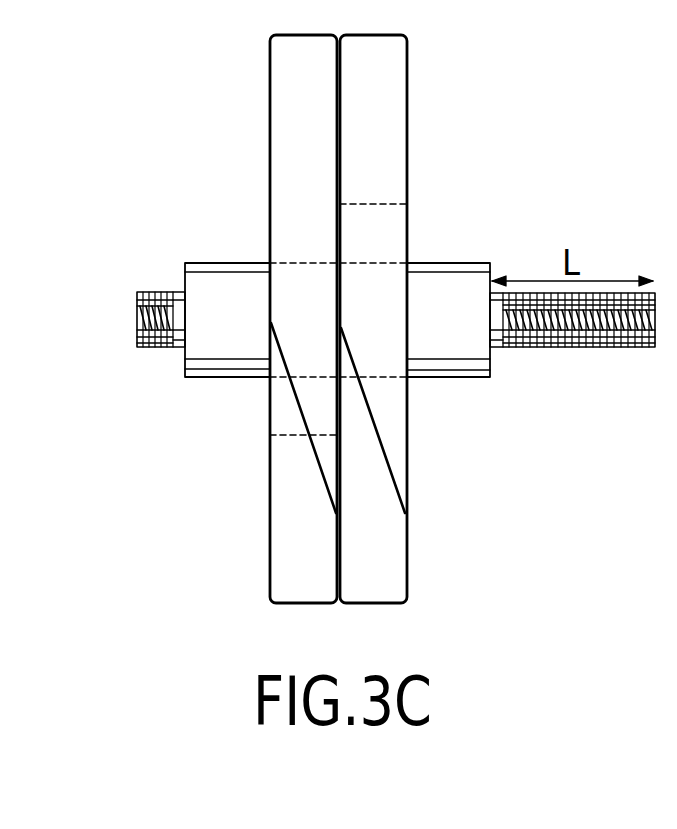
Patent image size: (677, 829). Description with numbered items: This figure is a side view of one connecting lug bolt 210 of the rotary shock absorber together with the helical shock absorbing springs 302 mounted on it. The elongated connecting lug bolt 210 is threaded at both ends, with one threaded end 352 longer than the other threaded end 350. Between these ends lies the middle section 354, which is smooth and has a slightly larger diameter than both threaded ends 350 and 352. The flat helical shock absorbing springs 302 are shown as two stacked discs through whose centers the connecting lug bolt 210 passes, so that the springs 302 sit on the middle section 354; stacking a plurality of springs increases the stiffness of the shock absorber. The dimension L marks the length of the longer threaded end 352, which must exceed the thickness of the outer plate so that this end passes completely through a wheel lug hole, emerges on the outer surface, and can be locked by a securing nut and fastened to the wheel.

The helical shock absorbing springs 302 is at (407, 572).
The connecting lug bolts 210 is at (435, 262).
The shorter threaded end 350 is at (153, 347).
The longer threaded end 352 is at (585, 350).
The middle section 354 is at (452, 352).